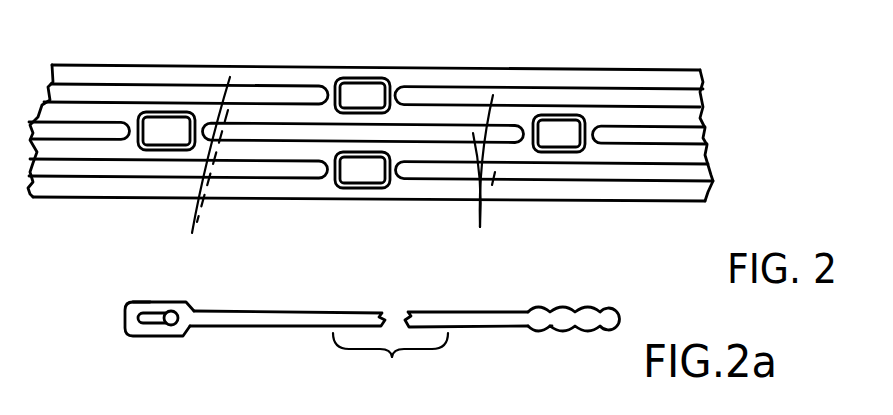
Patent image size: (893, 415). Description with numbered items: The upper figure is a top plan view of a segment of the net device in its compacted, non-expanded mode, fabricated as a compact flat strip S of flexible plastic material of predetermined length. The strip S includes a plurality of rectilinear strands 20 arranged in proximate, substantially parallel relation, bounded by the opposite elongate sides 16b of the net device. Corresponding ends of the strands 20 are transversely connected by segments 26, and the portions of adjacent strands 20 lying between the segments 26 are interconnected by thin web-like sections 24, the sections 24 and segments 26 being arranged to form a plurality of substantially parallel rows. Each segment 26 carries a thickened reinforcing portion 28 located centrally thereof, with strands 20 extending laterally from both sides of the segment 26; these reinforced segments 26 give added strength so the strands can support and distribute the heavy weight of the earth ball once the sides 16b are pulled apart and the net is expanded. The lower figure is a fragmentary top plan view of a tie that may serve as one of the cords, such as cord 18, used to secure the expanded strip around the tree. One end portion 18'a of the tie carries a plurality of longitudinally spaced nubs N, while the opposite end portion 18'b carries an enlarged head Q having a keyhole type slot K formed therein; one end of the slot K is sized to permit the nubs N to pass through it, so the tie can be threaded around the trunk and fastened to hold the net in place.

In FIG. 2, the compact flat strip S is at (541, 64).
In FIG. 2, the opposite elongate sides 16b is at (656, 68).
In FIG. 2, the rectilinear strands 20 is at (196, 171).
In FIG. 2, the thin web-like sections 24 is at (479, 177).
In FIG. 2, the segments 26 is at (563, 153).
In FIG. 2, the thickened reinforcing portion 28 is at (563, 122).
In FIG. 2a, the cord 18 is at (344, 322).
In FIG. 2a, the one end portion of the tie 18'a is at (573, 319).
In FIG. 2a, the opposite end portion of the tie 18'b is at (136, 323).
In FIG. 2a, the enlarged head Q is at (121, 300).
In FIG. 2a, the keyhole type slot K is at (180, 331).
In FIG. 2a, the nubs N is at (562, 347).